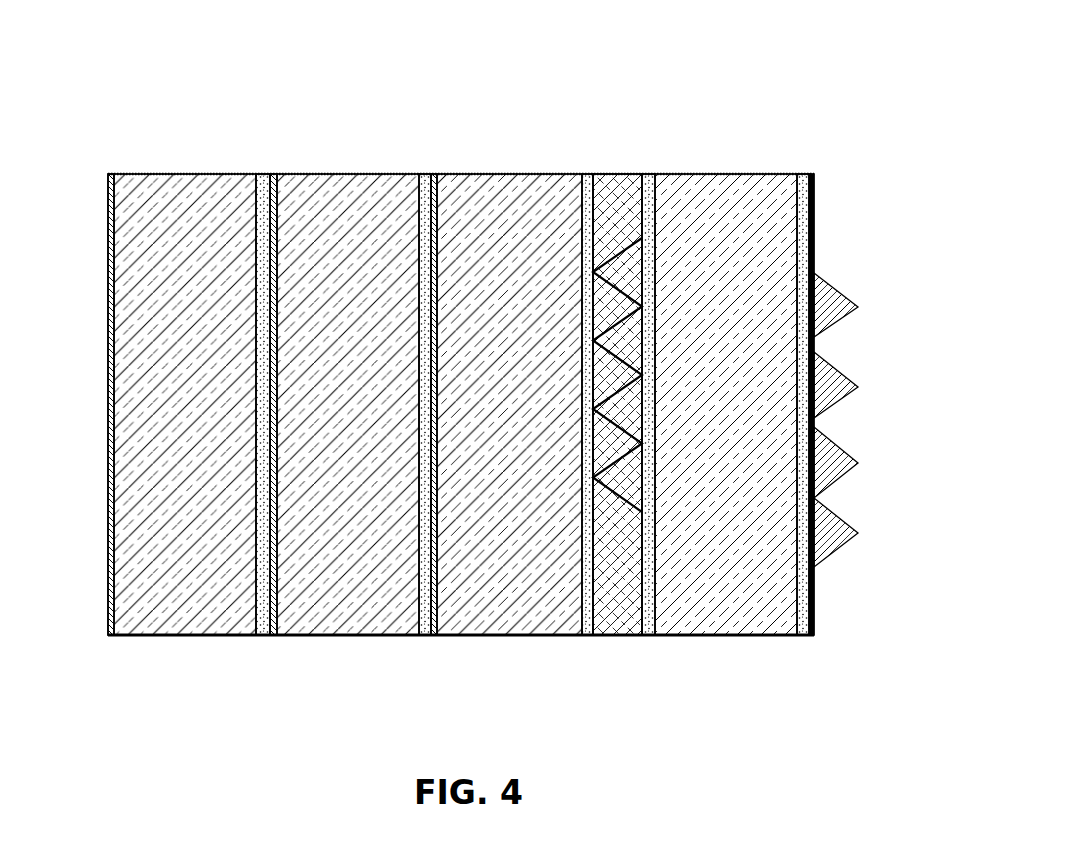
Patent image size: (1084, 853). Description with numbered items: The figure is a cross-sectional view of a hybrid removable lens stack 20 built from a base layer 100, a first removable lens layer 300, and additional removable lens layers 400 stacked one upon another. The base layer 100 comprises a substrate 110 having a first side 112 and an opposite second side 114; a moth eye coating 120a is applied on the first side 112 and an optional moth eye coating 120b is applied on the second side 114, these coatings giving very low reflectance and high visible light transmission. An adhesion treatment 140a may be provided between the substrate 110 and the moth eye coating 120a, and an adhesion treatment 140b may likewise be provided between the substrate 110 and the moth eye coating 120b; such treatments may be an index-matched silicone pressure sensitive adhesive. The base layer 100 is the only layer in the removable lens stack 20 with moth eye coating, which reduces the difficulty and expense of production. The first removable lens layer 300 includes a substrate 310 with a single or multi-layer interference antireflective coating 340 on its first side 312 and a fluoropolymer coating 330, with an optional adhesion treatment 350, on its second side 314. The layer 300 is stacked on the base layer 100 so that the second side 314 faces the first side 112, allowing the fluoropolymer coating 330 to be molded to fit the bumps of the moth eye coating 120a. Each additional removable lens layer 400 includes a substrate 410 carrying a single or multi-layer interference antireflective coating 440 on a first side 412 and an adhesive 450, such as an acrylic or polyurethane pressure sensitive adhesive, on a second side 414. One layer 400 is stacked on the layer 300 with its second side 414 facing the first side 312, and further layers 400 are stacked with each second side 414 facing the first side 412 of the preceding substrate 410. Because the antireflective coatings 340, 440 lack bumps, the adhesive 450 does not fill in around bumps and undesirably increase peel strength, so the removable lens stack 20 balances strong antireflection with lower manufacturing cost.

The removable lens stack 20 is at (935, 126).
The base layer 100 is at (858, 123).
The substrate 110 is at (742, 612).
The first side 112 is at (652, 582).
The second side 114 is at (798, 595).
The moth eye coating 120a is at (627, 255).
The moth eye coating 120b is at (832, 520).
The adhesion treatment 140a is at (652, 230).
The adhesion treatment 140b is at (803, 199).
The first removable lens layer 300 is at (640, 123).
The substrate 310 is at (543, 612).
The first side 312 is at (435, 598).
The second side 314 is at (590, 580).
The fluoropolymer coating 330 is at (615, 192).
The single or multi-layer interference antireflective coating 340 is at (434, 212).
The adhesion treatment 350 is at (589, 210).
The removable lens layer 400 is at (432, 123).
The substrate 410 is at (178, 612).
The first side 412 is at (108, 597).
The second side 414 is at (263, 590).
The single or multi-layer interference antireflective coating 440 is at (107, 195).
The adhesive 450 is at (263, 212).